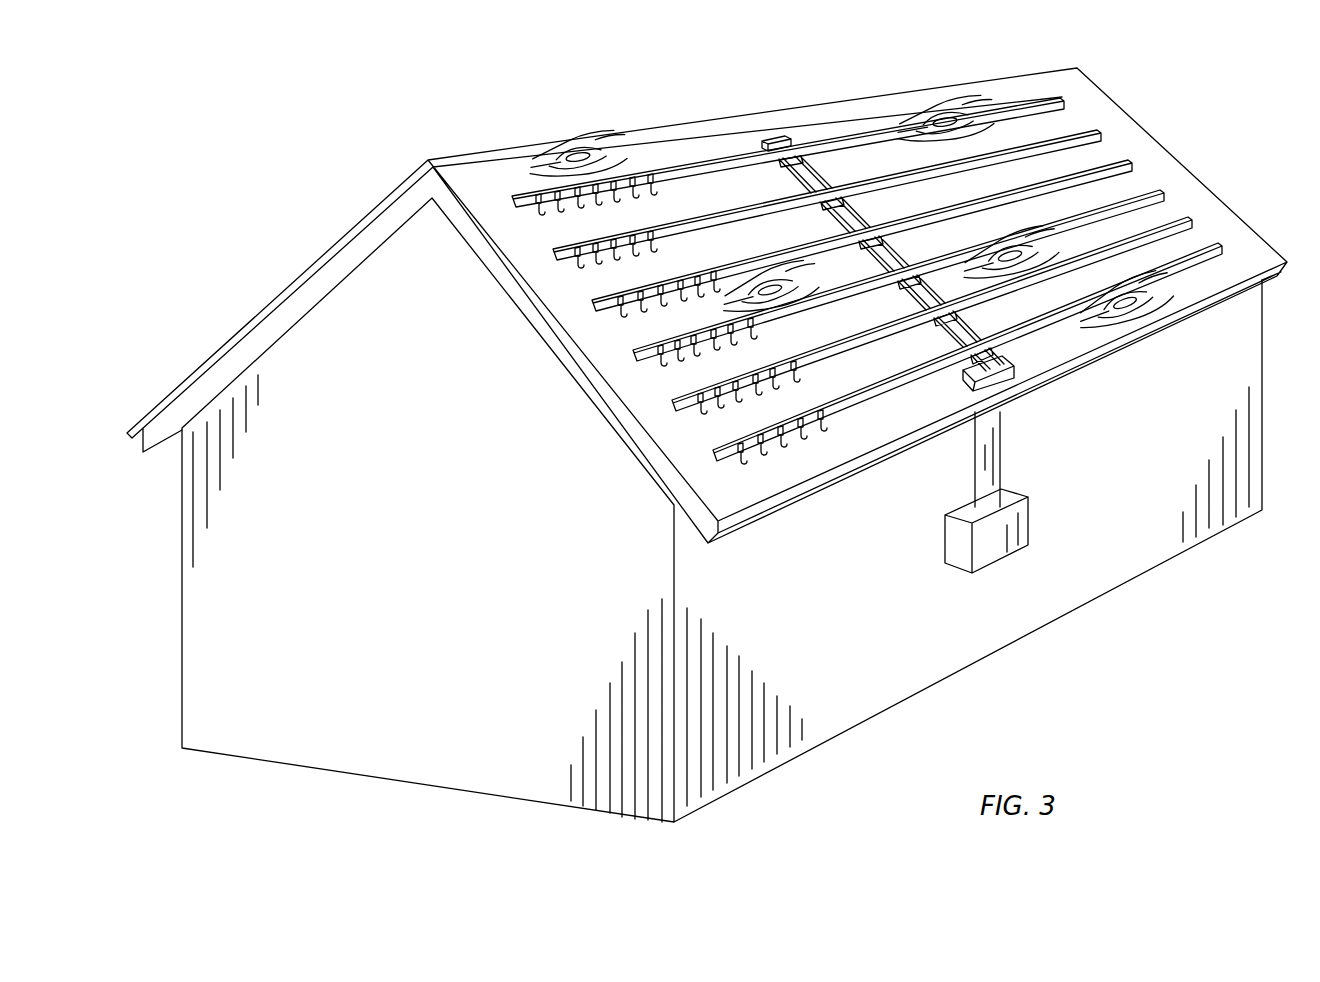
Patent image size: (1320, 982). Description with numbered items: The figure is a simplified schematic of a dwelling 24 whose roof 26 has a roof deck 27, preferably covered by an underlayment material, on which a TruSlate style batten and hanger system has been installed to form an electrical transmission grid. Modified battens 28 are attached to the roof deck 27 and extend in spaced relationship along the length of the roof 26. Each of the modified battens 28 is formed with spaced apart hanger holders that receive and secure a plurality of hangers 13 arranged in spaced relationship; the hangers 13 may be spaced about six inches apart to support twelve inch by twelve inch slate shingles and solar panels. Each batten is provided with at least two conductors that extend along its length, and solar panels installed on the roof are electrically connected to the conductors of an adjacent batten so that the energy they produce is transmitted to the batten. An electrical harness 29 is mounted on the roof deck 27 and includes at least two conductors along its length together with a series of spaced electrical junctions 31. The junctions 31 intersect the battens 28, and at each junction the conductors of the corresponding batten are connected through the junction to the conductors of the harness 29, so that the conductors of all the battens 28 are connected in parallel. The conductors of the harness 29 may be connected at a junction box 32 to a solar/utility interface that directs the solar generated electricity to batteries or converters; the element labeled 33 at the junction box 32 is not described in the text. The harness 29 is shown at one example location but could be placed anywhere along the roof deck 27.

The hangers 13 is at (550, 212).
The dwelling 24 is at (427, 552).
The roof 26 is at (707, 305).
The roof deck 27 is at (489, 198).
The modified battens 28 is at (697, 160).
The electrical harness 29 is at (758, 150).
The electrical junctions 31 is at (800, 120).
The junction box 32 is at (1013, 362).
The post and junction box 33 is at (928, 552).